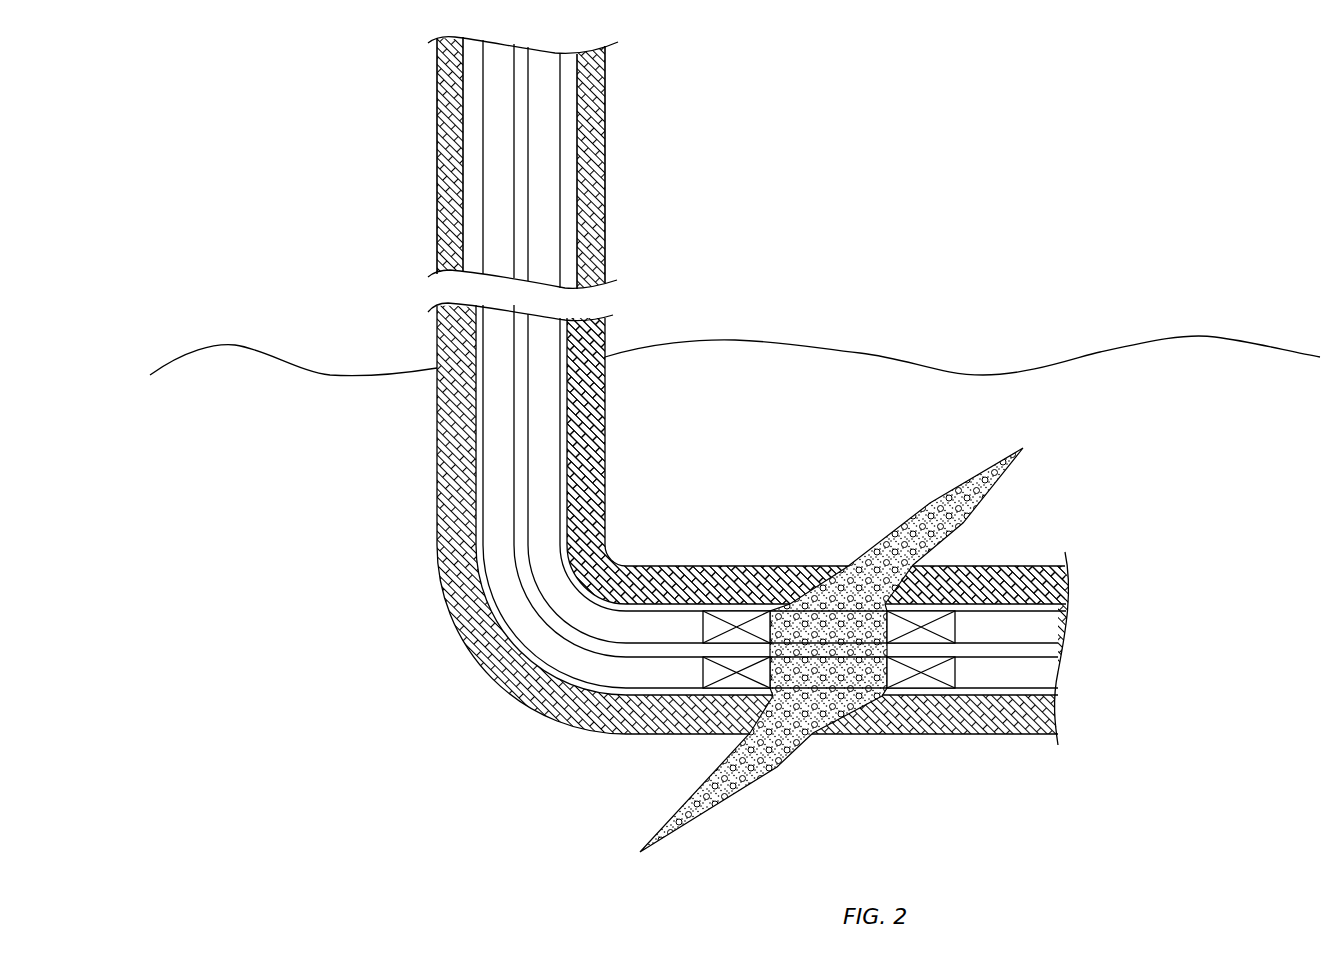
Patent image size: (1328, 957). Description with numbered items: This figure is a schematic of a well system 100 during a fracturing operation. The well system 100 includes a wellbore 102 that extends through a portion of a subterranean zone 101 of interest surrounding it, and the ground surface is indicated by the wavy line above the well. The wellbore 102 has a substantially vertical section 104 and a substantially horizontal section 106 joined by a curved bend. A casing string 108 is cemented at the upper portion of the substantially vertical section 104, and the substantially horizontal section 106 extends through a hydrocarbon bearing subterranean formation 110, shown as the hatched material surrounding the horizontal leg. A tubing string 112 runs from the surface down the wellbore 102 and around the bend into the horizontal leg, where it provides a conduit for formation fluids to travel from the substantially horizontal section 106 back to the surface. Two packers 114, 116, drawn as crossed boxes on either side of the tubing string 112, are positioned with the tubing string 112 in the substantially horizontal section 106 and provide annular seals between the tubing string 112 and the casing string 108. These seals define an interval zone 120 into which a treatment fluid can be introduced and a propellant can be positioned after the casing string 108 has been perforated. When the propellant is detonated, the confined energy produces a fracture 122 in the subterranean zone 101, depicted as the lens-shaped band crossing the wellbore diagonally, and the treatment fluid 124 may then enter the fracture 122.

The well system 100 is at (316, 72).
The subterranean zone 101 is at (735, 360).
The wellbore 102 is at (547, 62).
The substantially vertical section 104 is at (613, 340).
The substantially horizontal section 106 is at (638, 722).
The casing string 108 is at (460, 115).
The hydrocarbon bearing subterranean formation 110 is at (448, 413).
The tubing string 112 is at (530, 495).
The packer 114 is at (737, 688).
The packer 116 is at (928, 688).
The interval zone 120 is at (985, 630).
The fracture 122 is at (927, 503).
The treatment fluid 124 is at (977, 485).